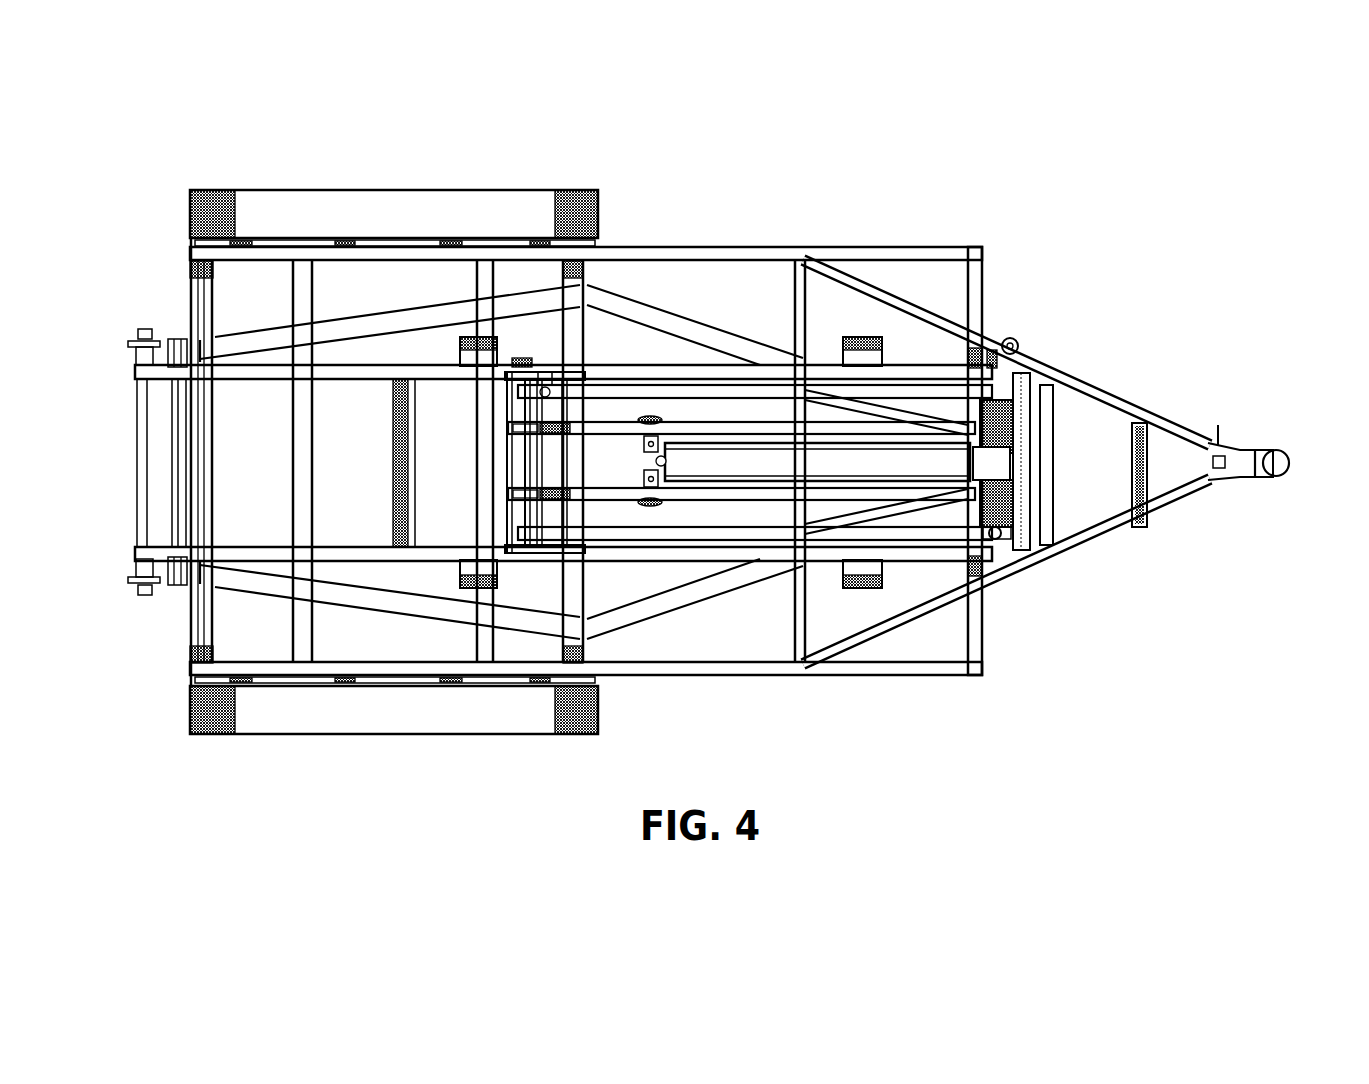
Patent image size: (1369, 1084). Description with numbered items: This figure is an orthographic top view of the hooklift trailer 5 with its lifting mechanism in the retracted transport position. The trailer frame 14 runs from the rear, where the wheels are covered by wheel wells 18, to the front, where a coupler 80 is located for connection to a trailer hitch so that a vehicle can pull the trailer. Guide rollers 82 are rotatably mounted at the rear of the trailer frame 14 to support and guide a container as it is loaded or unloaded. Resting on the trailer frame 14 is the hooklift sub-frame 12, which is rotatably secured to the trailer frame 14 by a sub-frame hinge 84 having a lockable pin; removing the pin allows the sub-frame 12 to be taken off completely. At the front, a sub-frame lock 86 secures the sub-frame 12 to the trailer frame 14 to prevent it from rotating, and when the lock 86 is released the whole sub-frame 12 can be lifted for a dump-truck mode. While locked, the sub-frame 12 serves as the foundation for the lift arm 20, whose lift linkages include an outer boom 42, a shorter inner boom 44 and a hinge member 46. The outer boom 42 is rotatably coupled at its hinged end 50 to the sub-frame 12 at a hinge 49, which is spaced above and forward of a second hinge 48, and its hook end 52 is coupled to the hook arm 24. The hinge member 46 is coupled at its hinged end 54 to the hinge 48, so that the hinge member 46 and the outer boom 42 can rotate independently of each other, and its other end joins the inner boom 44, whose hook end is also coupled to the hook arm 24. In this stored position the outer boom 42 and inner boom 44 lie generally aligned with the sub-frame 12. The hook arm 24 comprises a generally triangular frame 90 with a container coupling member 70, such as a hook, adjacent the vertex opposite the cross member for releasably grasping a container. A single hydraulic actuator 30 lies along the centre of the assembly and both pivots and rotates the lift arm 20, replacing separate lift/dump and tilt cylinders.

The hooklift trailer 5 is at (701, 475).
The hooklift sub-frame 12 is at (990, 537).
The trailer frame 14 is at (642, 676).
The wheel wells 18 is at (415, 710).
The lift arm 20 is at (772, 388).
The hook arm 24 is at (1005, 522).
The hydraulic actuator 30 is at (738, 452).
The outer boom 42 is at (712, 535).
The inner boom 44 is at (885, 385).
The hinge member 46 is at (553, 503).
The hinge 48 is at (517, 455).
The hinge 49 is at (520, 363).
The hinged end 50 is at (545, 368).
The hook end 52 is at (1000, 532).
The hinged end 54 is at (555, 503).
The container coupling member 70 is at (1002, 452).
The coupler 80 is at (1278, 476).
The guide rollers 82 is at (132, 587).
The sub-frame hinge 84 is at (180, 588).
The sub-frame lock 86 is at (1014, 339).
The triangular frame 90 is at (1000, 413).